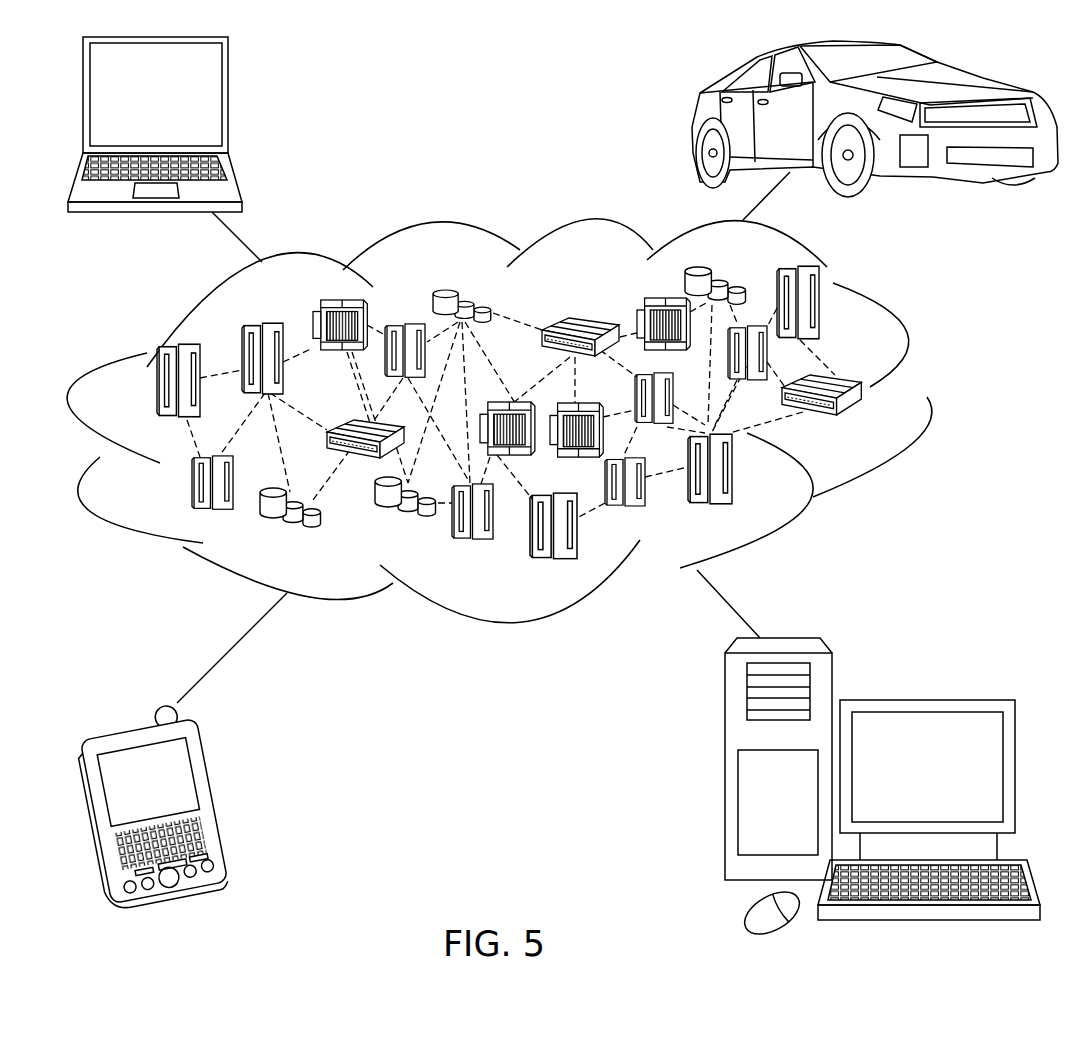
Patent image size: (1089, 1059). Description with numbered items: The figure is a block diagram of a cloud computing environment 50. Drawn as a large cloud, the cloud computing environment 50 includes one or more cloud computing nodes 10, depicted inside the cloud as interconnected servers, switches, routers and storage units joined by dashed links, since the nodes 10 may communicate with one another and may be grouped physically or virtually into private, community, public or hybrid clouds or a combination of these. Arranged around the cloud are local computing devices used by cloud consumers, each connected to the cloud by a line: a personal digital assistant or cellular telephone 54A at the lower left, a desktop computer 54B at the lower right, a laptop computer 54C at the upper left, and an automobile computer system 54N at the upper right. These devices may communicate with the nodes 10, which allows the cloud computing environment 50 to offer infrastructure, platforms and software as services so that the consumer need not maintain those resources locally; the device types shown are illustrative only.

The cloud computing nodes 10 is at (872, 426).
The cloud computing environment 50 is at (924, 392).
The personal digital assistant or cellular telephone 54A is at (217, 797).
The desktop computer 54B is at (927, 698).
The laptop computer 54C is at (228, 102).
The automobile computer system 54N is at (693, 118).